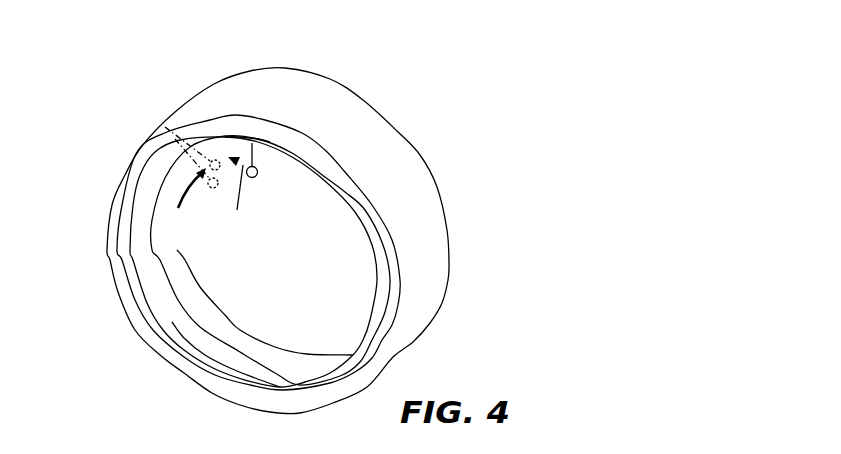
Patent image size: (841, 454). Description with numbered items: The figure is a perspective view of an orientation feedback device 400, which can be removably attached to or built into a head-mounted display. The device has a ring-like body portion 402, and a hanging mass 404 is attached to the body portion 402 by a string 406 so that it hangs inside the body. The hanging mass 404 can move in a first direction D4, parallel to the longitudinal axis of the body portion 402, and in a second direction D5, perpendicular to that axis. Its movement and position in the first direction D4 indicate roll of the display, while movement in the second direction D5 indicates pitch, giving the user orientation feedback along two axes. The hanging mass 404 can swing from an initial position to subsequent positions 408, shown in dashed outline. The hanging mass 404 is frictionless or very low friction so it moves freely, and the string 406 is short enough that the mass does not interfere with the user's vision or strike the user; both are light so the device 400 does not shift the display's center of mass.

The orientation feedback device 400 is at (269, 220).
The body portion 402 is at (108, 226).
The hanging mass 404 is at (258, 172).
The string 406 is at (258, 147).
The subsequent positions 408 is at (175, 139).
The first direction D4 is at (249, 202).
The second direction D5 is at (178, 206).